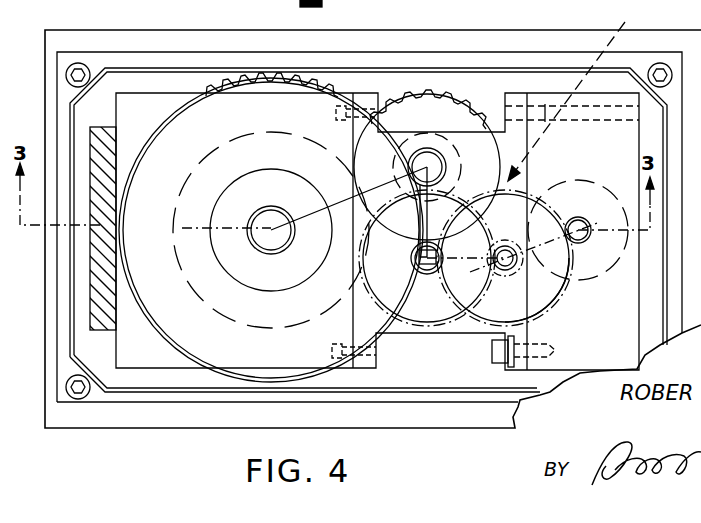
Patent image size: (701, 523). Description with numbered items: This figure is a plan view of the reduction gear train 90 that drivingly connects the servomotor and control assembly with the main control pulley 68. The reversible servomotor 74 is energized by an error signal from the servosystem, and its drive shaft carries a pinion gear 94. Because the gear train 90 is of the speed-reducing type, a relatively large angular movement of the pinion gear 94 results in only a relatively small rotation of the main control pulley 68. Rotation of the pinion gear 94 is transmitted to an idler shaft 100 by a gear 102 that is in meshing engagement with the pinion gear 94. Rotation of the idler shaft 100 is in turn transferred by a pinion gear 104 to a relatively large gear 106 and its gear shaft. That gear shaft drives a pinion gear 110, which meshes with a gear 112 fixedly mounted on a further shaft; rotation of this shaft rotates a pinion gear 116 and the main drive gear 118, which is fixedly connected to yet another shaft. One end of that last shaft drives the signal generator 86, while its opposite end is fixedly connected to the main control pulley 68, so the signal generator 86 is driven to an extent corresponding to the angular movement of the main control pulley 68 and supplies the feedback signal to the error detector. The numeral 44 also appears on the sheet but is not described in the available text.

The housing member 44 is at (300, 2).
The main control pulley 68 is at (218, 308).
The reversible servomotor 74 is at (590, 283).
The signal generator 86 is at (263, 211).
The reduction gear train 90 is at (612, 25).
The pinion gear 94 is at (595, 216).
The idler shaft 100 is at (520, 281).
The gear 102 is at (547, 308).
The pinion gear 104 is at (486, 224).
The relatively large gear 106 is at (427, 325).
The pinion gear 110 is at (445, 284).
The gear 112 is at (462, 118).
The pinion gear 116 is at (447, 125).
The main drive gear 118 is at (285, 84).